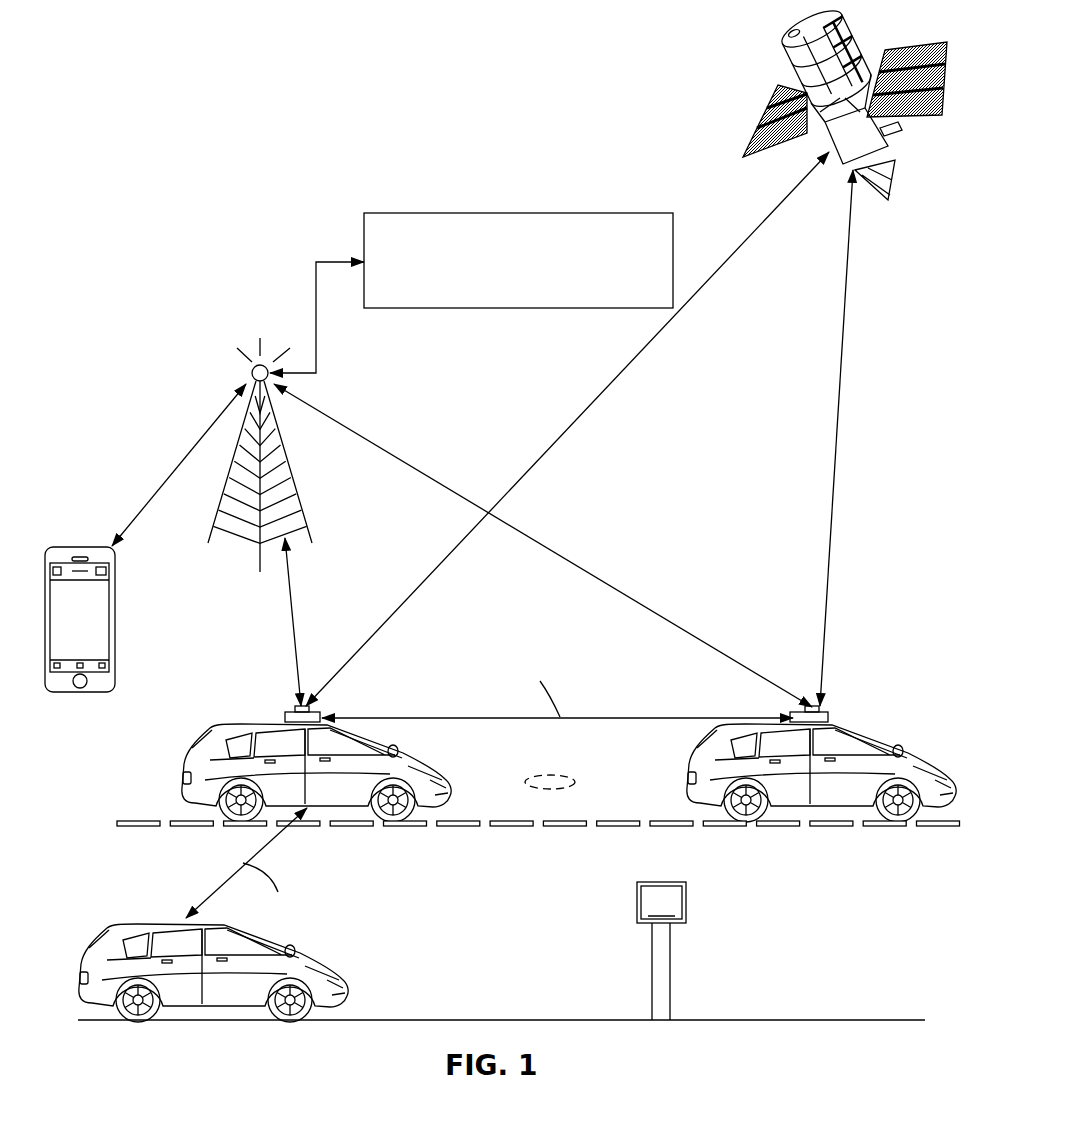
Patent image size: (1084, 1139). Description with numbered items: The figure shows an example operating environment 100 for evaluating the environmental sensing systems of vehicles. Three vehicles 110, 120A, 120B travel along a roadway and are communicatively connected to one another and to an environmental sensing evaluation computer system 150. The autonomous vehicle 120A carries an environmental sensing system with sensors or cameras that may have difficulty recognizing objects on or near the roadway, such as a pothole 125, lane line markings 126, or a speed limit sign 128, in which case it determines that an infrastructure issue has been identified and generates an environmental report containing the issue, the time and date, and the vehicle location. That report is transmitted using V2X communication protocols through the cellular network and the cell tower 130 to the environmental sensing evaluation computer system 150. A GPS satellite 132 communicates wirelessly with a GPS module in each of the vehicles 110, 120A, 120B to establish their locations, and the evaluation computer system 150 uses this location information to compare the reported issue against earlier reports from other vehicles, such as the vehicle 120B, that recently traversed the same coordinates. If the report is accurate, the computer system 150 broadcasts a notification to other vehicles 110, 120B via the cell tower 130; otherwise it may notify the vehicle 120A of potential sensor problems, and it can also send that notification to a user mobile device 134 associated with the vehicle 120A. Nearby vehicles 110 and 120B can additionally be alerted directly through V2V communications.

The operating environment 100 is at (170, 243).
The vehicle 110 is at (120, 917).
The autonomous vehicle 120A is at (205, 738).
The vehicle 120B is at (860, 735).
The pothole 125 is at (560, 780).
The lane line markings 126 is at (580, 813).
The speed limit sign 128 is at (670, 882).
The cell tower 130 is at (303, 495).
The GPS satellite 132 is at (795, 45).
The user mobile device 134 is at (115, 622).
The environmental sensing evaluation computer system 150 is at (437, 213).